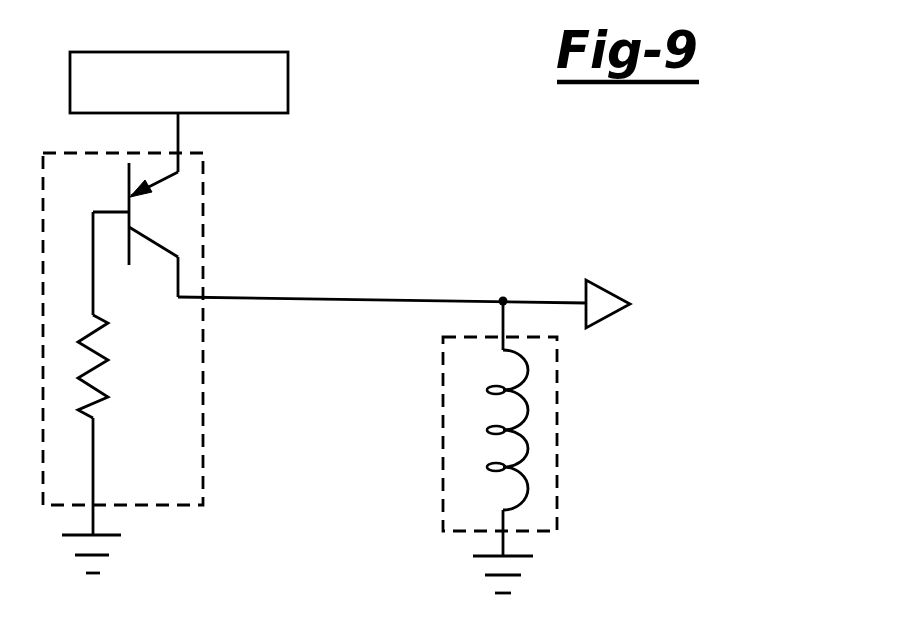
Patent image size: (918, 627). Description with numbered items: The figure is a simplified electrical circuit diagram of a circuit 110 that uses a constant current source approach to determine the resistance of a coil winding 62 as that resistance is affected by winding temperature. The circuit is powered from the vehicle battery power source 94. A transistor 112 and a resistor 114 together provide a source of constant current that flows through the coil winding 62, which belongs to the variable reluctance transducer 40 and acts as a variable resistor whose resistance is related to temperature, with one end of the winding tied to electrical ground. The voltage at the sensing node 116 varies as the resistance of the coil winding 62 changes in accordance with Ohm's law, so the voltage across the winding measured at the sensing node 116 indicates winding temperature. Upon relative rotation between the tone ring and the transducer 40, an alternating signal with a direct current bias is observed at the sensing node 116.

The vehicle battery power source 94 is at (288, 77).
The circuit 110 is at (438, 224).
The transistor 112 is at (169, 216).
The resistor 114 is at (97, 368).
The coil winding 62 is at (492, 432).
The transducer 40 is at (557, 493).
The sensing node 116 is at (610, 323).